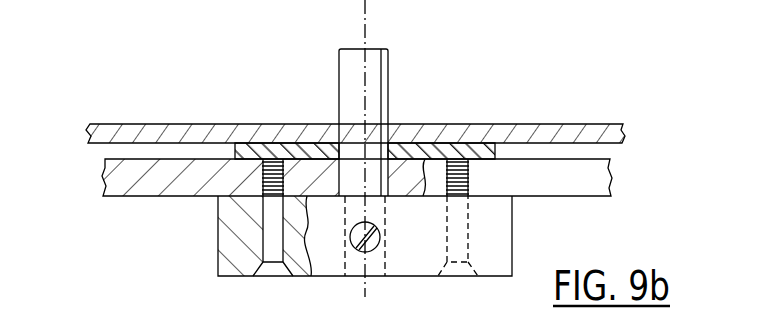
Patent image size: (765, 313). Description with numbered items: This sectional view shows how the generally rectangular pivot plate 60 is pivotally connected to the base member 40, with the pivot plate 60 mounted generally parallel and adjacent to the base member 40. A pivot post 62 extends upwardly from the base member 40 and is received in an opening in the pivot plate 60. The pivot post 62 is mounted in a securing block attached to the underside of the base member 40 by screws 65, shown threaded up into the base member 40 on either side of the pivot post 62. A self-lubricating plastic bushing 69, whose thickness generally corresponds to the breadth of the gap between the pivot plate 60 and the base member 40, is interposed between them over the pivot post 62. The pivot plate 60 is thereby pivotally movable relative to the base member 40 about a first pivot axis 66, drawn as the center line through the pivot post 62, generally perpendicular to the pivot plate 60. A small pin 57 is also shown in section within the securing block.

The base member 40 is at (128, 191).
The pin 57 is at (351, 241).
The pivot plate 60 is at (163, 123).
The pivot post 62 is at (341, 69).
The screws 65 is at (273, 274).
The first pivot axis 66 is at (366, 14).
The self-lubricating plastic bushing 69 is at (497, 153).